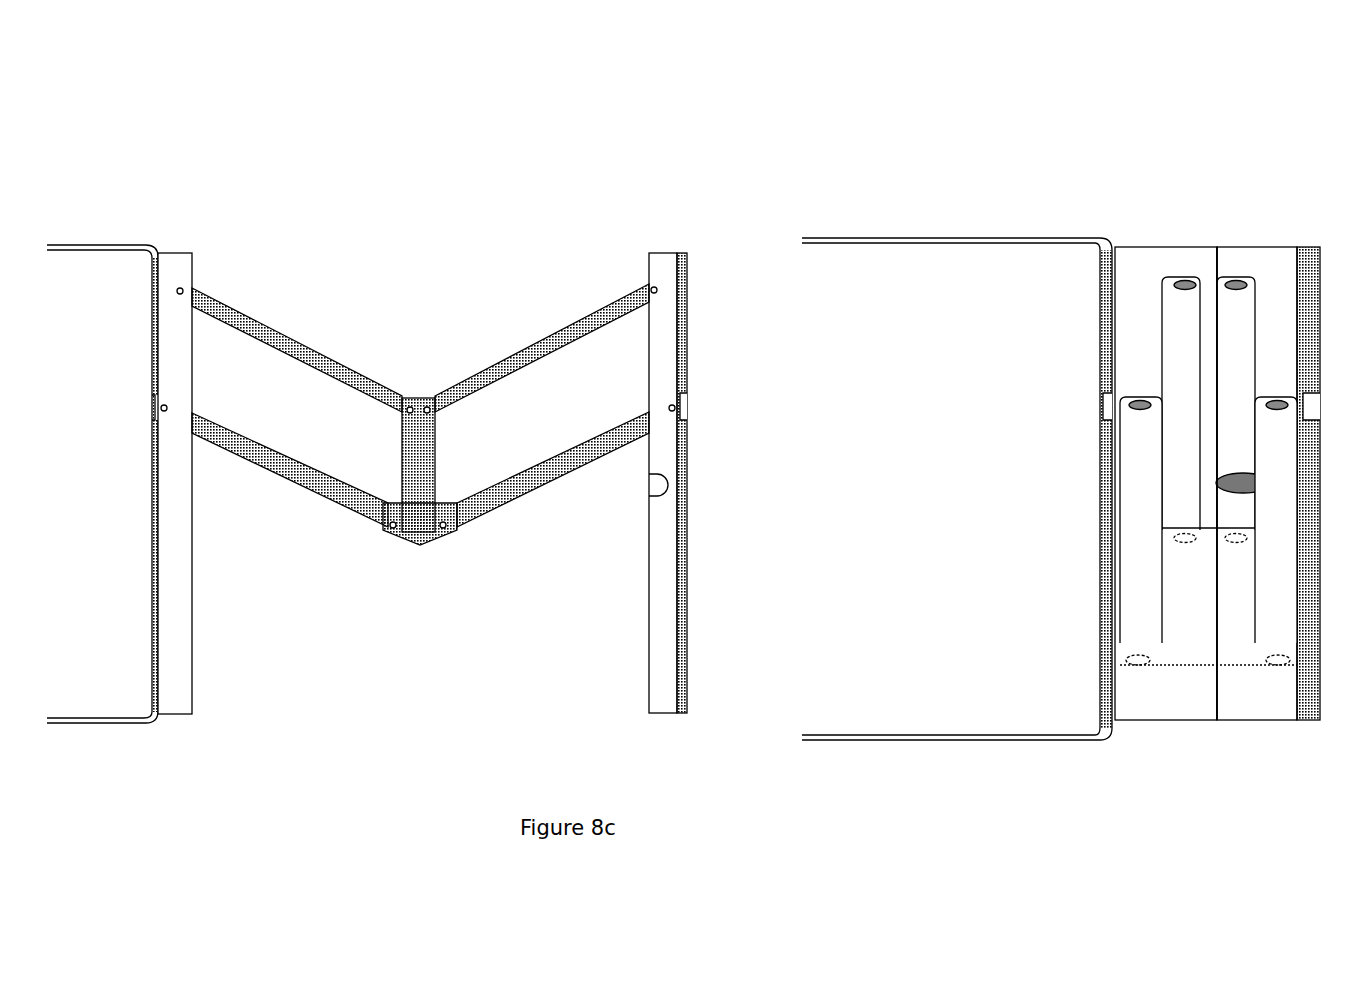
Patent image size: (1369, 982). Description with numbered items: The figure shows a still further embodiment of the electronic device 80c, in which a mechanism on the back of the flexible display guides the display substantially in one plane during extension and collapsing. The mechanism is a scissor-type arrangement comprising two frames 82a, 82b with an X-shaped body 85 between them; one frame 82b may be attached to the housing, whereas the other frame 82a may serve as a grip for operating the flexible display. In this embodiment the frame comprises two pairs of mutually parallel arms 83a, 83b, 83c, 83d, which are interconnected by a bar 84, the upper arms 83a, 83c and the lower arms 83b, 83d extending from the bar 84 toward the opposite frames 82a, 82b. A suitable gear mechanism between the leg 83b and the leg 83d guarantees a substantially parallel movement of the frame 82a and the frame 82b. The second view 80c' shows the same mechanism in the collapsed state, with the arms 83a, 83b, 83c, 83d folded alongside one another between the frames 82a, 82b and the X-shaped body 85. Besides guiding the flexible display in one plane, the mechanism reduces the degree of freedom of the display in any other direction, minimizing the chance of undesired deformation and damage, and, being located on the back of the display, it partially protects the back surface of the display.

The electronic device 80c is at (411, 52).
The view of the mechanism in the collapsed state 80c' is at (1037, 106).
The X-shaped body 85 is at (78, 268).
The frame 82a is at (176, 280).
The frame 82b is at (660, 279).
The arm 83a is at (342, 373).
The arm 83b is at (315, 492).
The arm 83c is at (470, 375).
The arm 83d is at (553, 480).
The bar 84 is at (413, 502).